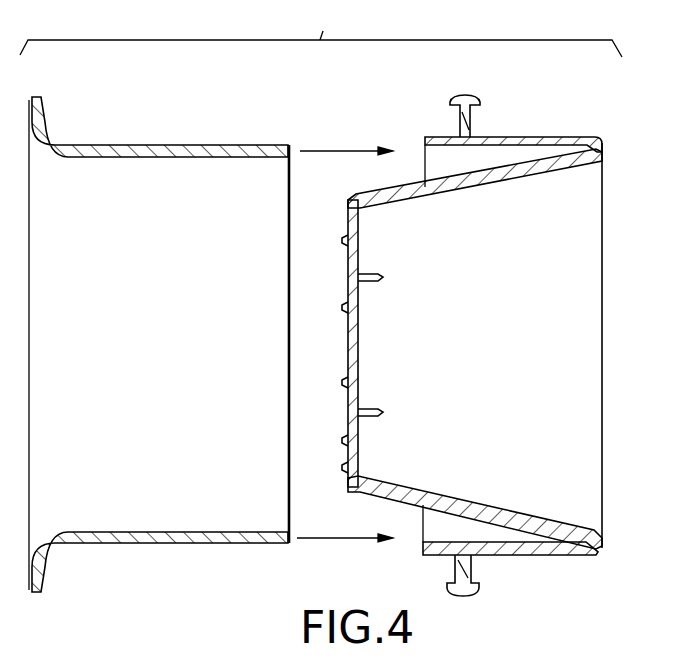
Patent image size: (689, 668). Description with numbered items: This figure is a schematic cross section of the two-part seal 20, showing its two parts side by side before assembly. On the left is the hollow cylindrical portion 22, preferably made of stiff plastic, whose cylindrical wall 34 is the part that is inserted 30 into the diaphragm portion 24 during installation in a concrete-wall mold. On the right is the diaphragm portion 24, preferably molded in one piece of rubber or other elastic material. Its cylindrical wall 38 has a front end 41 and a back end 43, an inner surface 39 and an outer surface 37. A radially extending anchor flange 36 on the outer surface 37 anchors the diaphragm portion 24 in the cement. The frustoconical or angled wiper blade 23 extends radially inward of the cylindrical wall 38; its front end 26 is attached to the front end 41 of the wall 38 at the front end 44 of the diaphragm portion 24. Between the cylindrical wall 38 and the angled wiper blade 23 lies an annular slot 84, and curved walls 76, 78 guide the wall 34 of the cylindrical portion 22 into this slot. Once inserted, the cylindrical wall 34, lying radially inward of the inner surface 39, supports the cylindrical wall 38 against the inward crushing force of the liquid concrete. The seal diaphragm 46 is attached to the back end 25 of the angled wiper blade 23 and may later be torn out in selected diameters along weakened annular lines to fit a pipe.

The two-part seal 20 is at (321, 31).
The hollow cylindrical portion 22 is at (46, 99).
The cylindrical wall 34 is at (150, 158).
The insertion 30 is at (326, 148).
The angled wiper blade 23 is at (477, 323).
The back end of angled wiper blade 25 is at (364, 208).
The seal diaphragm 46 is at (356, 360).
The anchor flange 36 is at (463, 95).
The curved wall 76 is at (436, 137).
The cylindrical wall 38 is at (506, 137).
The back end of cylindrical wall 43 is at (428, 140).
The inner surface of cylindrical wall 39 is at (468, 148).
The outer surface of cylindrical wall 37 is at (522, 136).
The diaphragm portion 24 is at (578, 136).
The front end of cylindrical wall 41 is at (598, 140).
The front end of diaphragm portion 44 is at (604, 152).
The front end of angled wiper blade 26 is at (566, 167).
The annular slot 84 is at (532, 172).
The curved wall 78 is at (428, 557).